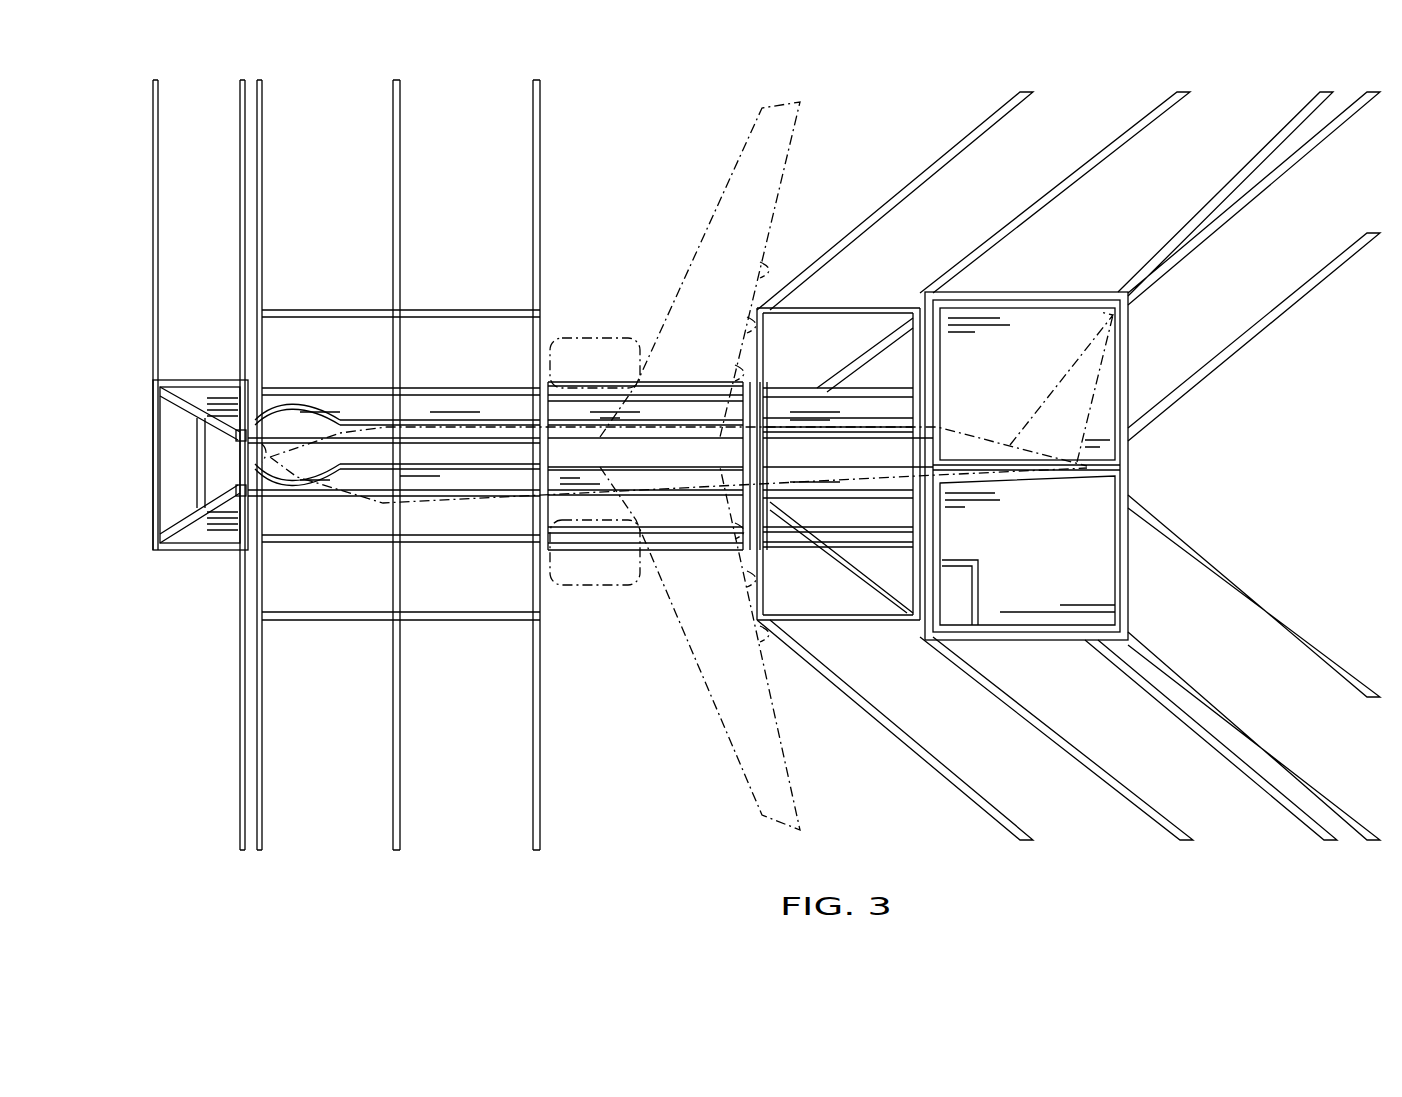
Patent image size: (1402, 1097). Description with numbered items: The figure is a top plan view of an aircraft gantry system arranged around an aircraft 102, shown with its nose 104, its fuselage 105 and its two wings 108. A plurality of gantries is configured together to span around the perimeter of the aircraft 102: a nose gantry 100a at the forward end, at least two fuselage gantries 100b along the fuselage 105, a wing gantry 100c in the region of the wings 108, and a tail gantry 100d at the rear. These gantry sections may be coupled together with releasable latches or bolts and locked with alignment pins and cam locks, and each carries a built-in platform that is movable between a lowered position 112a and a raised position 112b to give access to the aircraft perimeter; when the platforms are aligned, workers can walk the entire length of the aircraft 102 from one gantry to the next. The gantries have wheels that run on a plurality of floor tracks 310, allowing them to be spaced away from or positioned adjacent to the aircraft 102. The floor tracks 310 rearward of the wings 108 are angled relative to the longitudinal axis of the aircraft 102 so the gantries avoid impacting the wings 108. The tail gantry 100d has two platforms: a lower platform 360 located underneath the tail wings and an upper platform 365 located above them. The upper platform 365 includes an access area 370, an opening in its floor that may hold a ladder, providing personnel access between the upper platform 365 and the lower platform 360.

The aircraft 102 is at (687, 464).
The nose 104 is at (287, 463).
The fuselage 105 is at (650, 450).
The wings 108 is at (725, 178).
The nose gantry 100a is at (200, 378).
The fuselage gantries 100b is at (883, 640).
The wing gantry 100c is at (583, 413).
The tail gantry 100d is at (1019, 457).
The lowered position 112a is at (808, 410).
The raised position 112b is at (423, 482).
The floor tracks 310 is at (158, 130).
The lower platform 360 is at (1025, 372).
The upper platform 365 is at (1048, 559).
The access area 370 is at (960, 608).